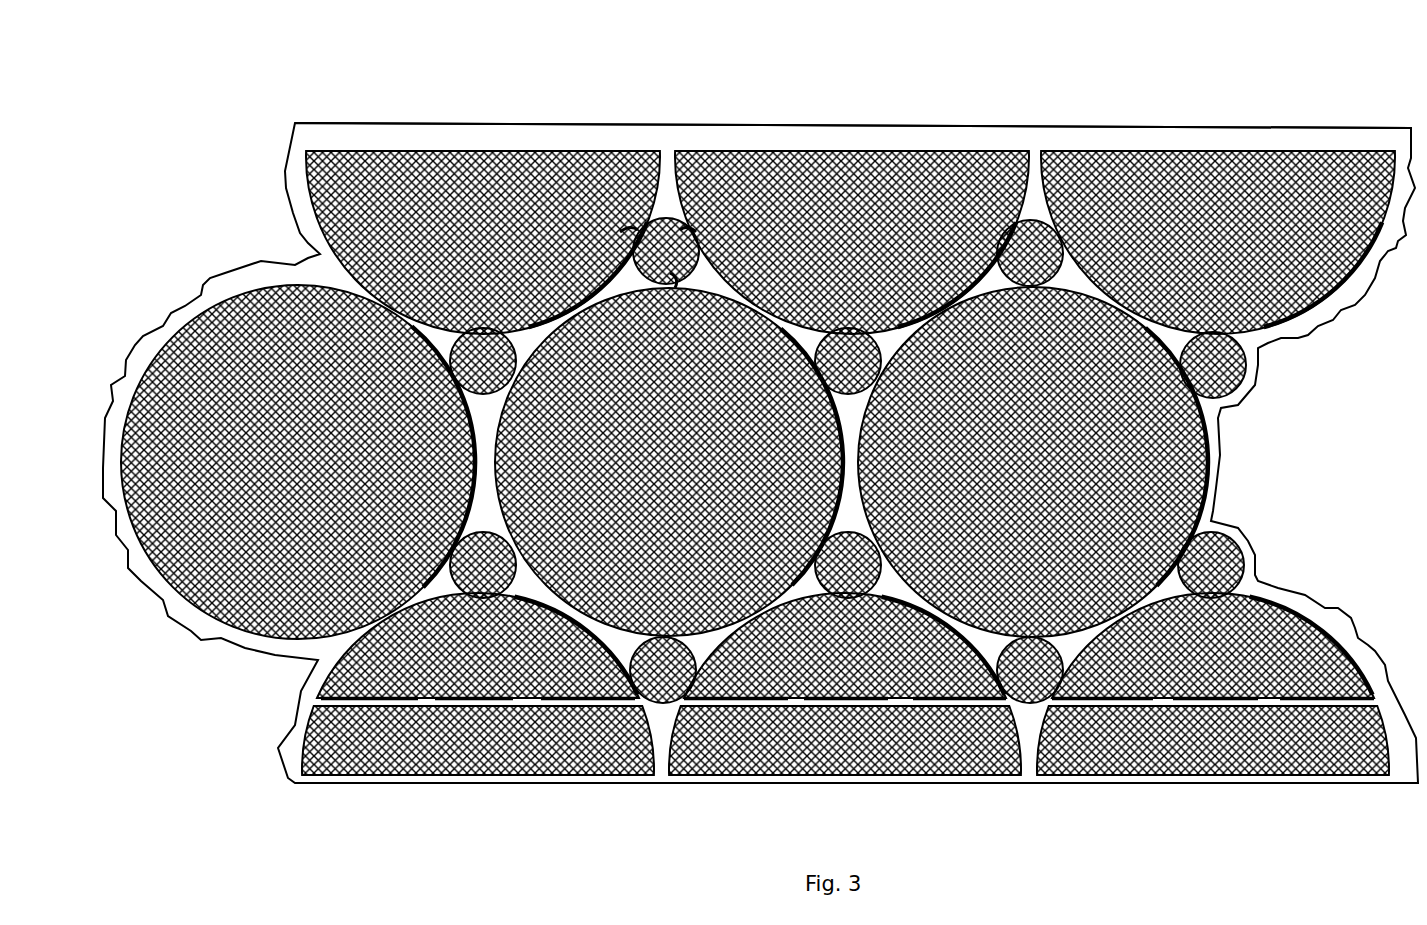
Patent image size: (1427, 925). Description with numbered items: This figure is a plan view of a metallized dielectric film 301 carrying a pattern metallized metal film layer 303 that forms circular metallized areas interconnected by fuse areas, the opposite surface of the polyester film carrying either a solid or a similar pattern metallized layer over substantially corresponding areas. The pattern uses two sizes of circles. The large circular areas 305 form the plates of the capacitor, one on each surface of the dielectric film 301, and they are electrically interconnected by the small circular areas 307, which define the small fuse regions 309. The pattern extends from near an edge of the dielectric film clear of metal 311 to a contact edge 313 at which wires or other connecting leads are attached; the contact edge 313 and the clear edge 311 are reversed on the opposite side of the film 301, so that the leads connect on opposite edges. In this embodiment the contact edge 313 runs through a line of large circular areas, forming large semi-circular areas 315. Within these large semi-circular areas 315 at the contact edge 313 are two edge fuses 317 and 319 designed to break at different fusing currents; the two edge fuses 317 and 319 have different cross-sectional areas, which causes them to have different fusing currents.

The metallized dielectric film 301 is at (1306, 122).
The pattern metallized metal film layer 303 is at (902, 165).
The large circular areas 305 is at (318, 475).
The small circular areas 307 is at (679, 255).
The small fuse regions 309 is at (616, 229).
The edge of the dielectric film clear of metal 311 is at (571, 130).
The contact edge 313 is at (1392, 753).
The large semi-circular areas 315 is at (500, 667).
The edge fuse 317 is at (418, 700).
The edge fuse 319 is at (523, 700).